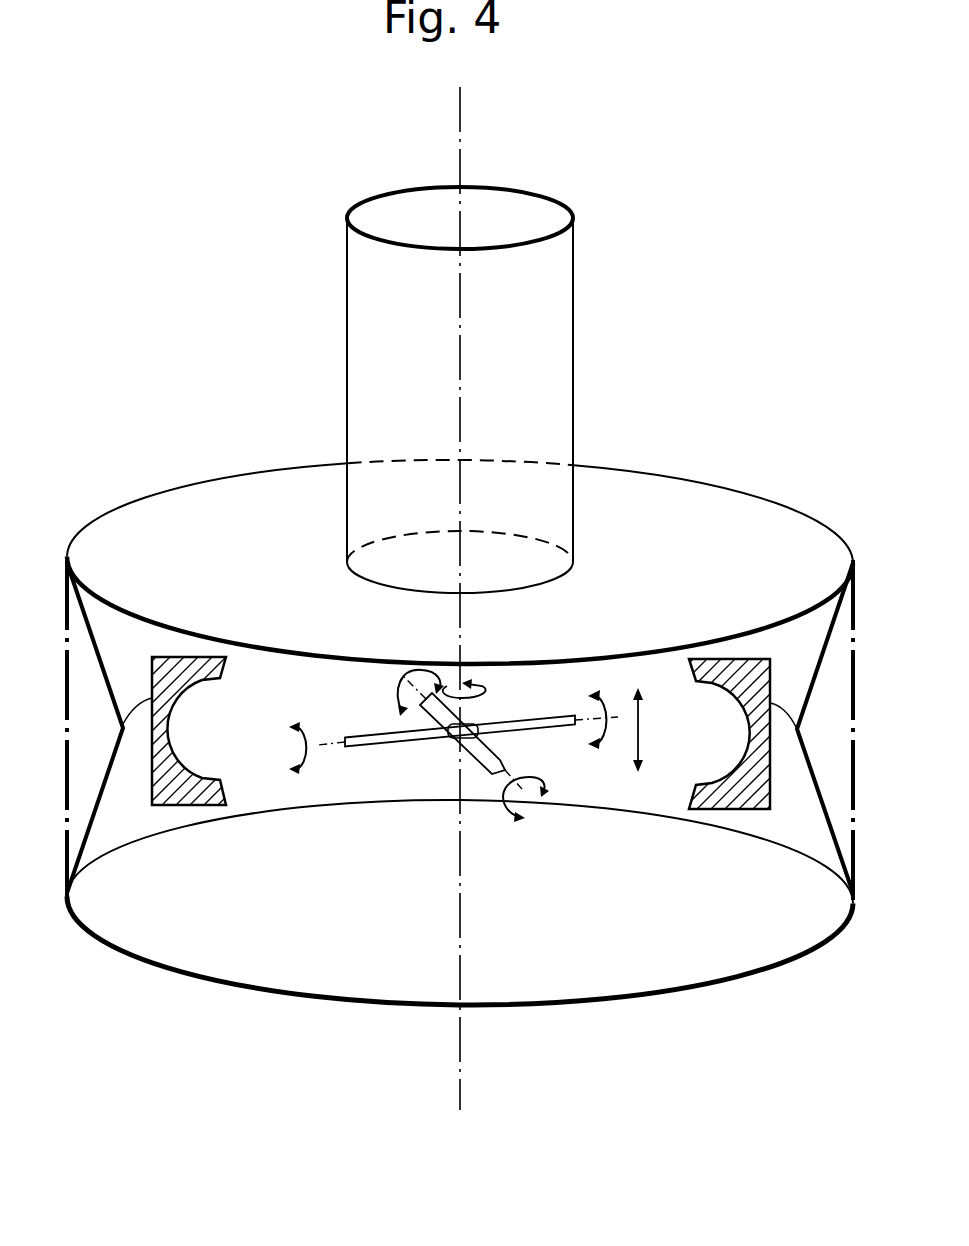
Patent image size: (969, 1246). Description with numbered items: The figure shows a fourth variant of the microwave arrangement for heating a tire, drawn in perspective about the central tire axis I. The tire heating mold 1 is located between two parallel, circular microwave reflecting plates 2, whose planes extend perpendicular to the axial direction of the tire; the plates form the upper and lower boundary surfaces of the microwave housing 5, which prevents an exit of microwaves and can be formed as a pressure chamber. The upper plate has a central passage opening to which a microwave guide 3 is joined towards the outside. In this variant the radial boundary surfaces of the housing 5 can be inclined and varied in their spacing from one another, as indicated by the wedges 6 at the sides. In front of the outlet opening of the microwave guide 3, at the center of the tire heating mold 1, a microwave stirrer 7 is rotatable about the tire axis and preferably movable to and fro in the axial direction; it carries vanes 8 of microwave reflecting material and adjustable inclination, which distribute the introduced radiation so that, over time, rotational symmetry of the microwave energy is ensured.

The axis of rotation I is at (462, 128).
The tire heating mold 1 is at (762, 683).
The microwave reflecting plates 2 is at (693, 505).
The microwave guide 3 is at (560, 318).
The housing 5 is at (202, 979).
The wedges 6 is at (105, 775).
The microwave stirrer 7 is at (382, 755).
The vanes 8 is at (423, 742).